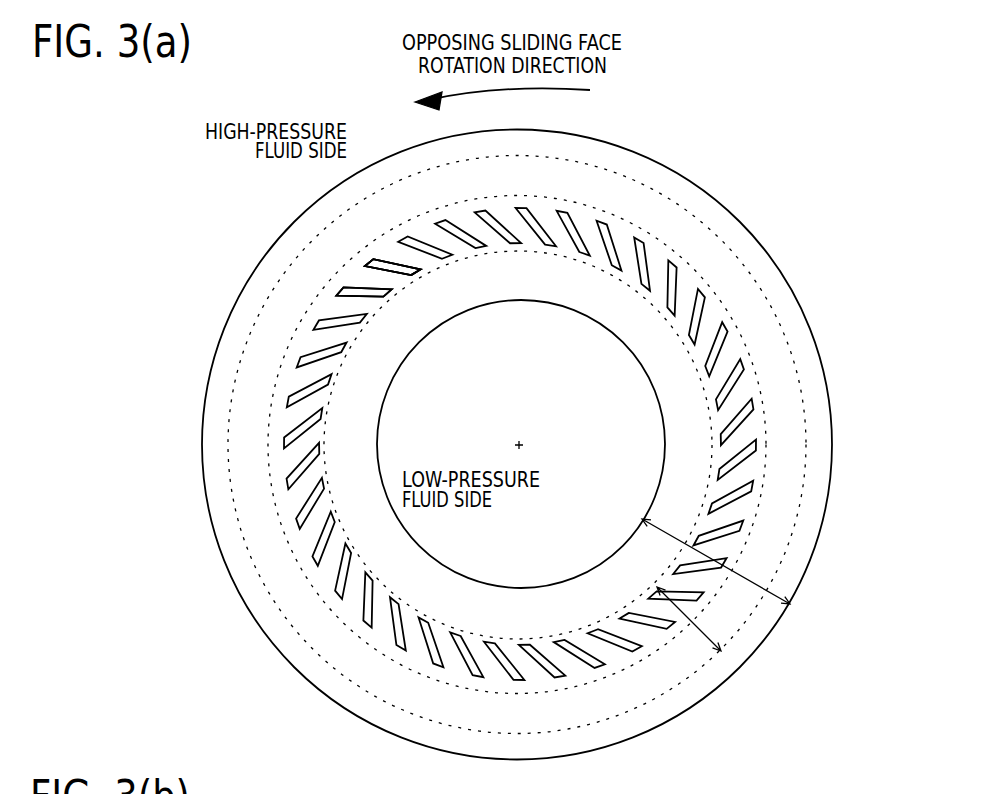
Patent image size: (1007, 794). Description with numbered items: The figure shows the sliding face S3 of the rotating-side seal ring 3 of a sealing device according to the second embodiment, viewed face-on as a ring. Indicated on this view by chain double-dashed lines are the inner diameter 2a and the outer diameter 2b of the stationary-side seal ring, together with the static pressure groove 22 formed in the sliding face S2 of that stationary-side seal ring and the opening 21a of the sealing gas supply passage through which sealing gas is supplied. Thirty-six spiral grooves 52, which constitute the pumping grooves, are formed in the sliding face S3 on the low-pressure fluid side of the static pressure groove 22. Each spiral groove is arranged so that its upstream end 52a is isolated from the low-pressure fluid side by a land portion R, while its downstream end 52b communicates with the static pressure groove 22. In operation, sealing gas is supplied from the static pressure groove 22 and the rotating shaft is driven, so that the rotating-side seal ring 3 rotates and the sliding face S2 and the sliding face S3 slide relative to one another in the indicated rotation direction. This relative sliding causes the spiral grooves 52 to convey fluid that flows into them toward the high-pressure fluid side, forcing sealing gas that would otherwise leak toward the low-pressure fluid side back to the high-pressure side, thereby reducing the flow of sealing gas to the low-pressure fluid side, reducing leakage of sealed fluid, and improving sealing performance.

The rotating-side seal ring 3 is at (652, 155).
The opening of the sealing gas supply passage 21a is at (520, 197).
The static pressure groove 22 is at (700, 287).
The spiral grooves 52 is at (360, 233).
The upstream ends 52a is at (360, 233).
The downstream ends 52b is at (370, 266).
The inner diameter 2a is at (585, 632).
The outer diameter 2b is at (690, 683).
The sliding face S2 is at (707, 632).
The sliding face S3 is at (760, 592).
The land portion R is at (515, 247).